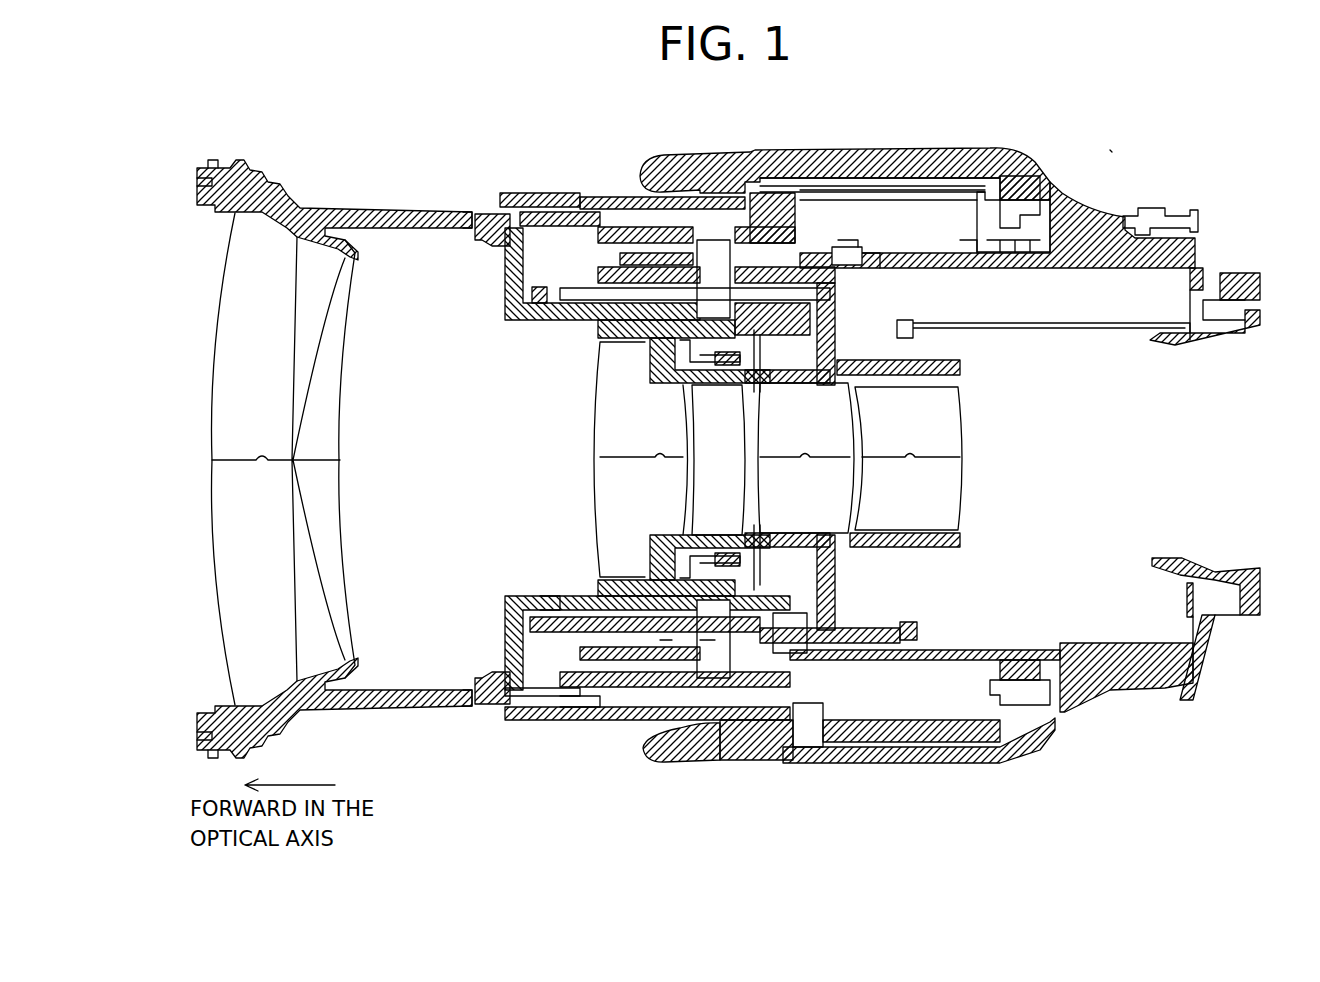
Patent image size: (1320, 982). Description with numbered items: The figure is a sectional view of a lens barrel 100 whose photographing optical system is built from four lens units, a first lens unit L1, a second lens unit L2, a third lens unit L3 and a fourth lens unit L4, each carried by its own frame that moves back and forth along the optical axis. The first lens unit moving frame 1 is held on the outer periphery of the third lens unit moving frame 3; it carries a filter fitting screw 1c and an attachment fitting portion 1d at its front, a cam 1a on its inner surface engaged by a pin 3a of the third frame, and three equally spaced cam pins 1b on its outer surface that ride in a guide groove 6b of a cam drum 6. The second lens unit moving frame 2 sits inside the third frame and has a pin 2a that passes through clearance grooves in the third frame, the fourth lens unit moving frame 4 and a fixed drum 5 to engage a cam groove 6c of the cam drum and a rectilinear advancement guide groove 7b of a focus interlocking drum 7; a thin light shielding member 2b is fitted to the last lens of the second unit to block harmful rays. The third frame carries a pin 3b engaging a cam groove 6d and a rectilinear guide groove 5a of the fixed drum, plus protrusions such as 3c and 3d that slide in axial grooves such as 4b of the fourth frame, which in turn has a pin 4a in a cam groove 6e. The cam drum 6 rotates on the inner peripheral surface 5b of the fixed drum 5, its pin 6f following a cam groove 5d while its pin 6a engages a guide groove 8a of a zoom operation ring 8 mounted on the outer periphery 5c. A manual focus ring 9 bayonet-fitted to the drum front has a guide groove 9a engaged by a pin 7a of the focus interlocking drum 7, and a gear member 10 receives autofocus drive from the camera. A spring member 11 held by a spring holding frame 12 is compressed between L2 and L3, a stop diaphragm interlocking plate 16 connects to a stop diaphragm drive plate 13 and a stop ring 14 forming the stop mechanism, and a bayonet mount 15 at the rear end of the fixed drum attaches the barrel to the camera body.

The lens barrel 100 is at (1124, 142).
The first lens unit moving frame 1 is at (246, 176).
The cam 1a is at (462, 212).
The cam pin 1b is at (550, 722).
The filter fitting screw 1c is at (200, 184).
The attachment fitting portion 1d is at (210, 160).
The second lens unit moving frame 2 is at (600, 318).
The pin 2a is at (708, 240).
The light shielding member 2b is at (800, 547).
The third lens unit moving frame 3 is at (525, 195).
The pin 3a is at (485, 214).
The pin 3b is at (790, 660).
The protrusion 3c is at (570, 618).
The protrusion 3d is at (707, 677).
The fourth lens unit moving frame 4 is at (813, 293).
The pin 4a is at (760, 280).
The groove 4b is at (555, 598).
The fixed drum 5 is at (925, 262).
The rectilinear advancement guide groove 5a is at (948, 650).
The inner peripheral surface 5b is at (957, 250).
The outer periphery 5c is at (950, 258).
The cam groove 5d is at (868, 258).
The cam drum 6 is at (877, 658).
The pin 6a is at (808, 732).
The guide groove 6b is at (590, 722).
The cam groove 6c is at (663, 250).
The cam groove 6d is at (773, 660).
The cam groove 6e is at (840, 280).
The pin 6f is at (847, 262).
The focus interlocking drum 7 is at (598, 200).
The pin 7a is at (762, 200).
The rectilinear advancement guide groove 7b is at (630, 233).
The zoom operation ring 8 is at (950, 763).
The guide groove 8a is at (863, 747).
The manual focus ring 9 is at (697, 163).
The rectilinear advancement guide groove 9a is at (907, 200).
The gear member 10 is at (1030, 223).
The spring member 11 is at (710, 643).
The spring holding frame 12 is at (667, 643).
The stop diaphragm drive plate 13 is at (773, 385).
The stop ring 14 is at (1152, 222).
The bayonet mount 15 is at (1207, 627).
The stop diaphragm interlocking plate 16 is at (1203, 273).
The first lens unit L1 is at (283, 459).
The second lens unit L2 is at (669, 459).
The third lens unit L3 is at (806, 458).
The fourth lens unit L4 is at (908, 458).